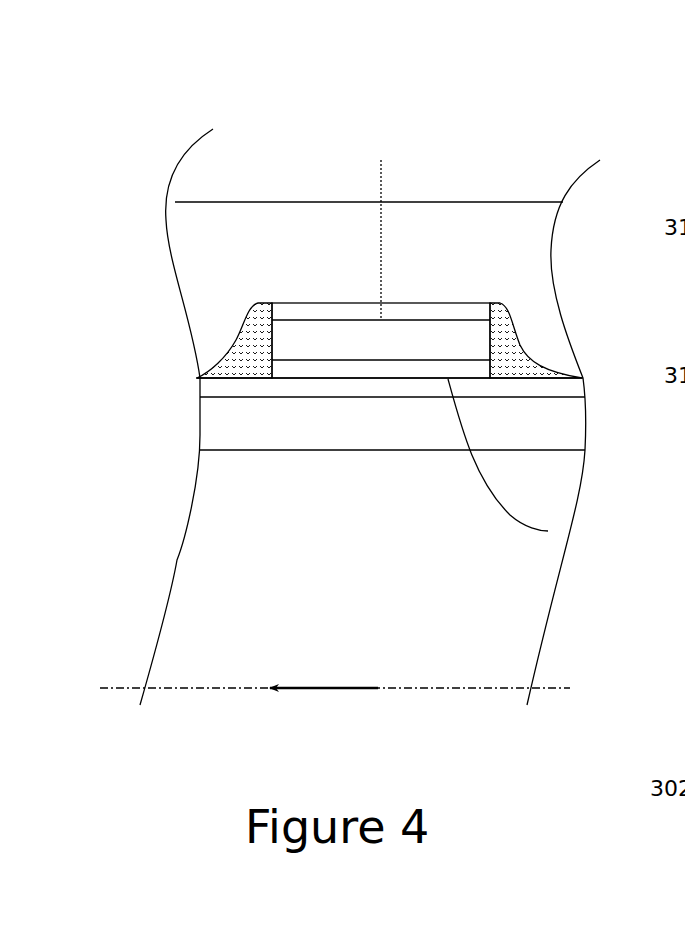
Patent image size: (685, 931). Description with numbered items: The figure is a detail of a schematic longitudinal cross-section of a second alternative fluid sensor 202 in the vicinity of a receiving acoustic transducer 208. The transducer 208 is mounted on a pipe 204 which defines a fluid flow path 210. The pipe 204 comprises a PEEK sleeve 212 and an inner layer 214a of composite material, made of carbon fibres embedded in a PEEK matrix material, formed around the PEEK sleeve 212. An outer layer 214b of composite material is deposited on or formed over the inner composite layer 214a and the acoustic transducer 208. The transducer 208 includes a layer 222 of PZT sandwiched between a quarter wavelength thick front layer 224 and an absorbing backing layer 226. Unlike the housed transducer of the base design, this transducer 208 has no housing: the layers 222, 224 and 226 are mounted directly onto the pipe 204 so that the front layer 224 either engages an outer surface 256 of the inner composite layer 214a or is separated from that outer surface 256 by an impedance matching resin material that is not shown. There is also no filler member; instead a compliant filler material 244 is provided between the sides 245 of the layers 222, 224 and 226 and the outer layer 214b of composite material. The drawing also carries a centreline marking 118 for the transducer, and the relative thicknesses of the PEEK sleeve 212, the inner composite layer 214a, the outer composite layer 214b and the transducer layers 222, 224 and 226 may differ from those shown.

The channel centerline 118 is at (383, 160).
The second alternative fluid sensor 202 is at (222, 734).
The pipe 204 is at (592, 420).
The acoustic transducer 208 is at (414, 260).
The fluid flow path 210 is at (378, 586).
The PEEK sleeve 212 is at (218, 430).
The inner layer of composite material 214a is at (220, 388).
The outer layer of composite material 214b is at (216, 254).
The layer of PZT 222 is at (463, 340).
The front layer 224 is at (473, 372).
The absorbing backing layer 226 is at (460, 310).
The compliant filler material 244 is at (265, 340).
The sides of the layers 245 is at (257, 312).
The outer surface of the inner composite layer 256 is at (548, 531).